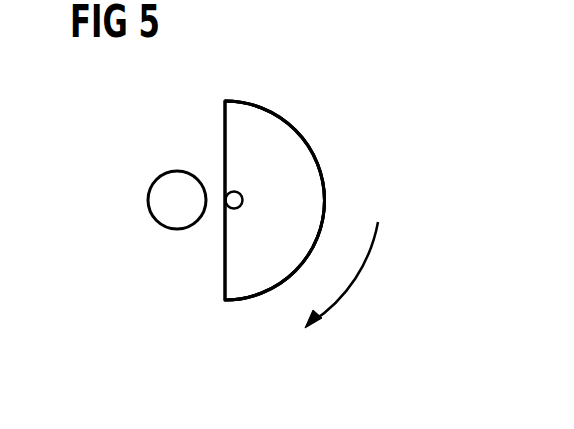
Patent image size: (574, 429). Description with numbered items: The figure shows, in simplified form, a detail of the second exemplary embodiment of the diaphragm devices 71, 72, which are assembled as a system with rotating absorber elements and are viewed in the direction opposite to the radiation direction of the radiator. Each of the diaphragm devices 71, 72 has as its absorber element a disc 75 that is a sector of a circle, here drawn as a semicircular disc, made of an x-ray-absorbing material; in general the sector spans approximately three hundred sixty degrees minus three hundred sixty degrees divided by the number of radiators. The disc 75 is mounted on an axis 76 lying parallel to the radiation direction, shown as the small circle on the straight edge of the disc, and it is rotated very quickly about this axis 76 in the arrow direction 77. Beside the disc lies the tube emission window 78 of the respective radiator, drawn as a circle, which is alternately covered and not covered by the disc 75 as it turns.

The diaphragm device 71 is at (260, 87).
The diaphragm device 72 is at (275, 200).
The disc 75 is at (328, 203).
The axis 76 is at (242, 197).
The arrow direction 77 is at (362, 272).
The tube emission window 78 is at (148, 200).